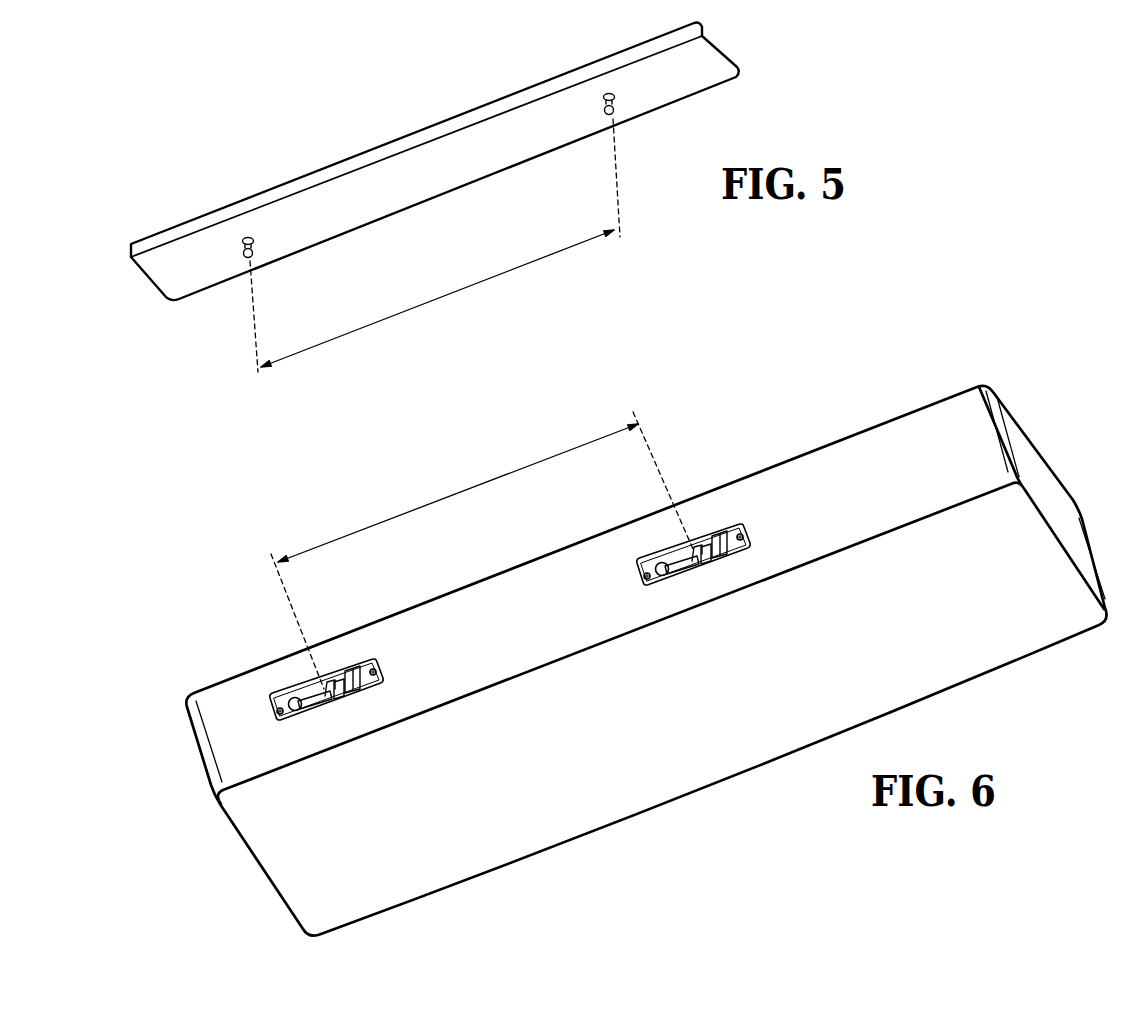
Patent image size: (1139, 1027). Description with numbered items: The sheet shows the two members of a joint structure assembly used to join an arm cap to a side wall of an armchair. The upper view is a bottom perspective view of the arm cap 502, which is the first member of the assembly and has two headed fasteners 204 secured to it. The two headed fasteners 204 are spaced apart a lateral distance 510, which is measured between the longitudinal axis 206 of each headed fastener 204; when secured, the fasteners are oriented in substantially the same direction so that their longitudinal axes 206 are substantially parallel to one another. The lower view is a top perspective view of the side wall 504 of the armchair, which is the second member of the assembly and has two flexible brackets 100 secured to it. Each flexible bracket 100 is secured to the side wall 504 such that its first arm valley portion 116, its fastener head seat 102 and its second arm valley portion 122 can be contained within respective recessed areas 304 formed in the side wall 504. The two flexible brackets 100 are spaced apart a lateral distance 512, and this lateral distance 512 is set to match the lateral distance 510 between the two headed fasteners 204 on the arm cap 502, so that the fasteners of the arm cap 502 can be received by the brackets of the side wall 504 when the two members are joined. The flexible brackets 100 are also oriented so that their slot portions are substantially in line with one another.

In FIG. 5, the arm cap 502 is at (410, 162).
In FIG. 5, the headed fastener 204 is at (253, 253).
In FIG. 5, the longitudinal axis 206 is at (250, 320).
In FIG. 5, the lateral distance 510 is at (443, 293).
In FIG. 6, the side wall 504 is at (940, 407).
In FIG. 6, the flexible bracket 100 is at (362, 667).
In FIG. 6, the fastener head seat 102 is at (335, 684).
In FIG. 6, the first arm valley portion 116 is at (326, 690).
In FIG. 6, the second arm valley portion 122 is at (346, 676).
In FIG. 6, the recessed area 304 is at (315, 702).
In FIG. 6, the lateral distance 512 is at (453, 495).